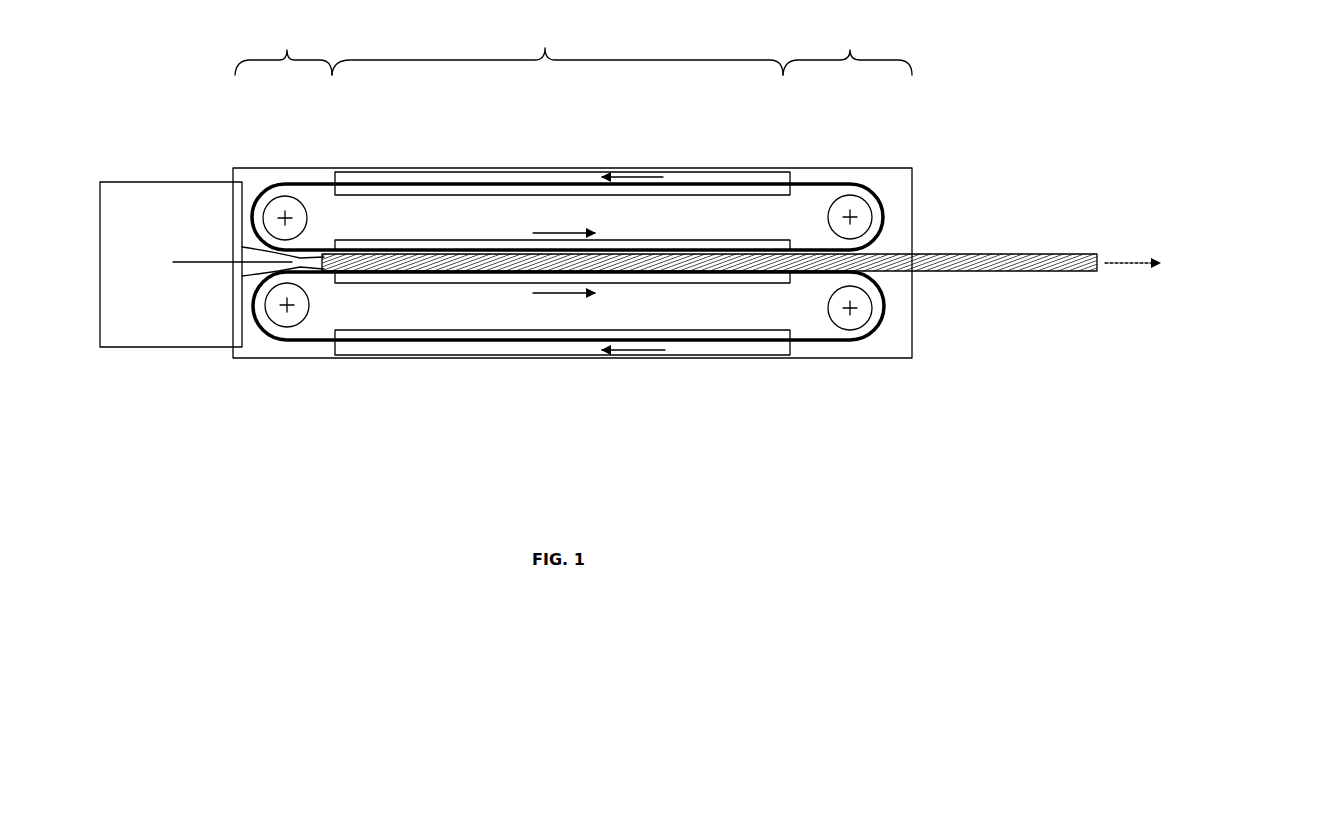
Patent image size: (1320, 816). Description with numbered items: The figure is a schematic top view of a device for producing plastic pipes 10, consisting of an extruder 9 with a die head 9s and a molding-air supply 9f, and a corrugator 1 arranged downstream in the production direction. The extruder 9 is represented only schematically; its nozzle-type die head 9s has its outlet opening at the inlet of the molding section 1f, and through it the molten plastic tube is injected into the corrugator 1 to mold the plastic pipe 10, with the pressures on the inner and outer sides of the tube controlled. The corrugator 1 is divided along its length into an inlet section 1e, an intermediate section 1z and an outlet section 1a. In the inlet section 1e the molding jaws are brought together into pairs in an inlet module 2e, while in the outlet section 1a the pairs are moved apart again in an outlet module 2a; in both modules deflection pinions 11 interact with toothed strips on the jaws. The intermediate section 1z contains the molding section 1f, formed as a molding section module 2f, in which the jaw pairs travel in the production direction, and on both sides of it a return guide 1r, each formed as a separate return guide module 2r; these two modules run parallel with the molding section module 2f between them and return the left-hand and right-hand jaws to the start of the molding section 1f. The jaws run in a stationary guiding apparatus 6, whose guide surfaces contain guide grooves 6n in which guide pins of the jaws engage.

The corrugator 1 is at (468, 461).
The inlet section 1e is at (302, 239).
The inlet module 2e is at (295, 430).
The intermediate section 1z is at (557, 49).
The outlet section 1a is at (848, 221).
The outlet module 2a is at (850, 396).
The return guide 1r is at (562, 269).
The return guide module 2r is at (514, 158).
The molding section 1f is at (562, 241).
The molding section module 2f is at (634, 232).
The stationary guiding apparatus 6 is at (621, 281).
The guide groove 6n is at (835, 182).
The extruder 9 is at (160, 368).
The die head 9s is at (248, 245).
The molding-air supply 9f is at (322, 257).
The plastic pipe 10 is at (1028, 275).
The deflection pinion 11 is at (276, 168).